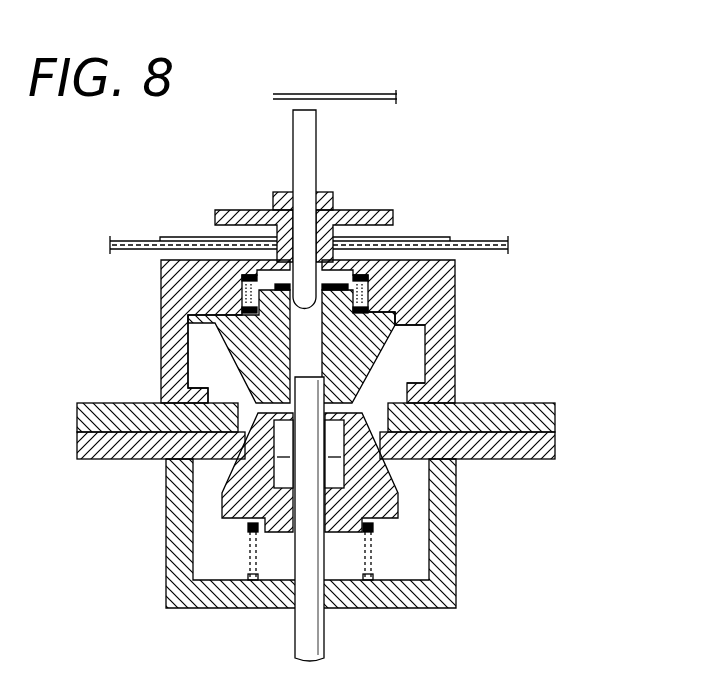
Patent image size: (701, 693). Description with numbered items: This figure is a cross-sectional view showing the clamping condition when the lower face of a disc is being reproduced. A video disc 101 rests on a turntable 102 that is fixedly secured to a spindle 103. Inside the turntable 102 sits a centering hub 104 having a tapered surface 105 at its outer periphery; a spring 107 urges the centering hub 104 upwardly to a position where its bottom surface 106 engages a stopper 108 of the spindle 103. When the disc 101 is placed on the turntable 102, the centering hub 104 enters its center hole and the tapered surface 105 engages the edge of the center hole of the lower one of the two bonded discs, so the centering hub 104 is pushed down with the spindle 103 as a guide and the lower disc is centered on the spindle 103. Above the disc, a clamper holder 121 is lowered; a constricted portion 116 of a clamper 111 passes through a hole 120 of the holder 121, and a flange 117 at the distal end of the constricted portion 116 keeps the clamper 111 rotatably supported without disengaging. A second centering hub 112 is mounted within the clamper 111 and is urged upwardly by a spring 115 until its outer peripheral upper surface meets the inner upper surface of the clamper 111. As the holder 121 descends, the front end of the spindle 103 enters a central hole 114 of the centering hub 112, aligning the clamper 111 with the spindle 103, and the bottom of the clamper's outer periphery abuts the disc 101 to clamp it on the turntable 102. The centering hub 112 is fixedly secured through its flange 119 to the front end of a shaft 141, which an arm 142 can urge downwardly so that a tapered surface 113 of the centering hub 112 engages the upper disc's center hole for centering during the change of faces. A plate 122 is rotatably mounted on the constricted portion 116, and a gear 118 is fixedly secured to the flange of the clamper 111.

The video disc 101 is at (84, 462).
The turntable 102 is at (175, 575).
The spindle 103 is at (302, 645).
The centering hub 104 is at (393, 507).
The tapered surface 105 is at (395, 480).
The bottom surface 106 is at (362, 606).
The spring 107 is at (383, 545).
The stopper 108 is at (232, 485).
The clamper 111 is at (172, 316).
The centering hub 112 is at (383, 353).
The tapered surface 113 is at (372, 382).
The central hole 114 is at (285, 338).
The spring 115 is at (402, 290).
The constricted portion 116 is at (277, 248).
The flange 117 is at (375, 213).
The gear 118 is at (328, 193).
The flange 119 is at (397, 335).
The hole 120 is at (162, 277).
The clamper holder 121 is at (478, 238).
The plate 122 is at (423, 240).
The shaft 141 is at (298, 143).
The arm 142 is at (357, 92).